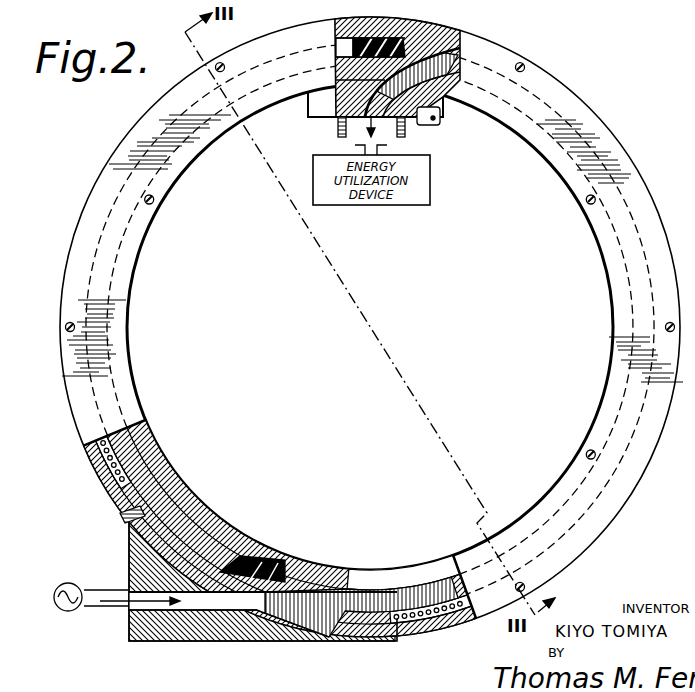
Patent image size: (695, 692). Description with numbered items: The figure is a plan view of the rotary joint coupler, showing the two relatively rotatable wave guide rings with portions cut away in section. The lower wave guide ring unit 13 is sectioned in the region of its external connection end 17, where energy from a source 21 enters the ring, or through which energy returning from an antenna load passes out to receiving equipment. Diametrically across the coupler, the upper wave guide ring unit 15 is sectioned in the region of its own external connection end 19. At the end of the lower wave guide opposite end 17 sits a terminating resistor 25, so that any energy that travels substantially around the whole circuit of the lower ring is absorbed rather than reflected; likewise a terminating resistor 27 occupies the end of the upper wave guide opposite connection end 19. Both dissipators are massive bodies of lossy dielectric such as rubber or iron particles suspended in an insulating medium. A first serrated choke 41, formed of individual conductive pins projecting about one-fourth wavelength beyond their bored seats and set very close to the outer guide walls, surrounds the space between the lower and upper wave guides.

The lower wave guide ring unit 13 is at (370, 20).
The upper wave guide ring unit 15 is at (604, 530).
The external connection end 17 is at (128, 609).
The external connection end 19 is at (365, 117).
The source 21 is at (66, 584).
The terminating resistor 25 is at (223, 555).
The terminating resistor 27 is at (408, 20).
The first serrated choke 41 is at (441, 620).